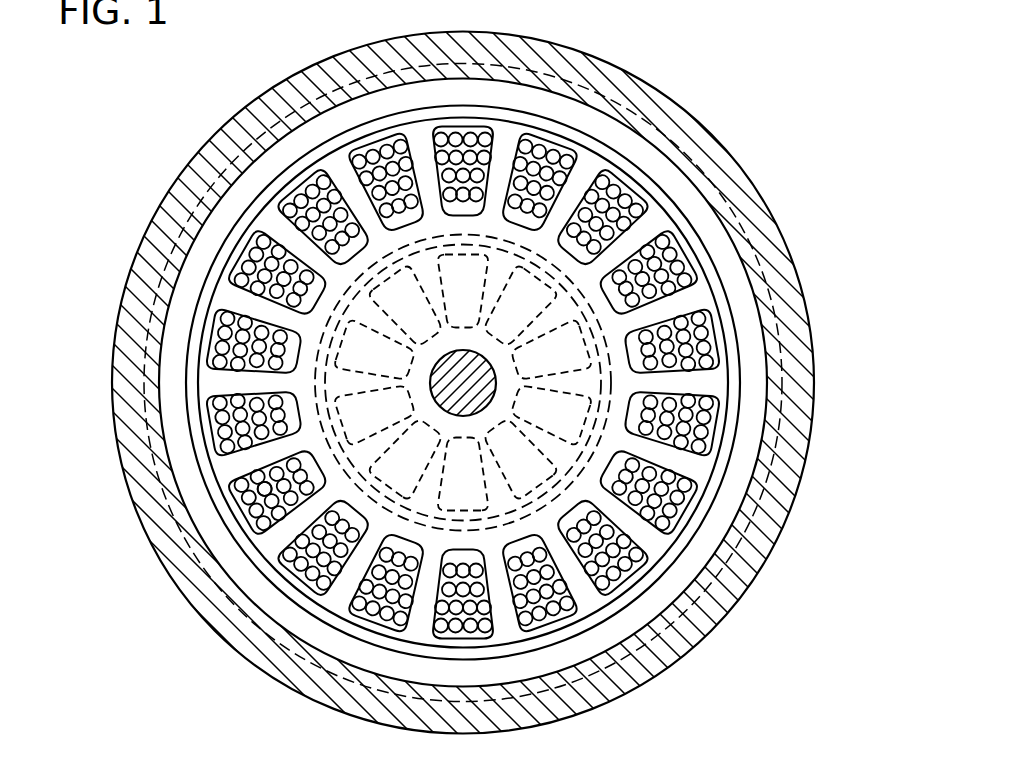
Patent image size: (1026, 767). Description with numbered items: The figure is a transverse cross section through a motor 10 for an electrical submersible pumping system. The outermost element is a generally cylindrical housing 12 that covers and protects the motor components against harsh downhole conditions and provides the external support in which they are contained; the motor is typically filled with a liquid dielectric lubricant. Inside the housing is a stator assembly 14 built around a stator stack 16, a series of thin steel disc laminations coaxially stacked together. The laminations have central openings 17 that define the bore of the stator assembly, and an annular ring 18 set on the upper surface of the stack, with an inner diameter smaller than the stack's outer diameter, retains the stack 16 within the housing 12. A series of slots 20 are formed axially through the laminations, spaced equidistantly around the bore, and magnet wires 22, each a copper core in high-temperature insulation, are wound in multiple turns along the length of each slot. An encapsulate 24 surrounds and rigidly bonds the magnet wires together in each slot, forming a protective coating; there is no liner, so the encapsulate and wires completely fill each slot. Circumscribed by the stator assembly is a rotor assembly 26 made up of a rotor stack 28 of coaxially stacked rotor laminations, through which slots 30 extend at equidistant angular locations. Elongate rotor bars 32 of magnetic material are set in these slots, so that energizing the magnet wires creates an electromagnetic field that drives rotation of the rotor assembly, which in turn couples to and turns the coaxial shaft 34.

The motor 10 is at (137, 143).
The housing 12 is at (817, 403).
The stator assembly 14 is at (182, 267).
The stator stack 16 is at (692, 467).
The central openings 17 is at (326, 404).
The annular ring 18 is at (623, 142).
The slots 20 is at (718, 345).
The magnet wires 22 is at (258, 491).
The encapsulate 24 is at (297, 567).
The rotor assembly 26 is at (598, 268).
The rotor stack 28 is at (500, 503).
The slots 30 is at (448, 252).
The rotor bars 32 is at (470, 285).
The shaft 34 is at (445, 412).